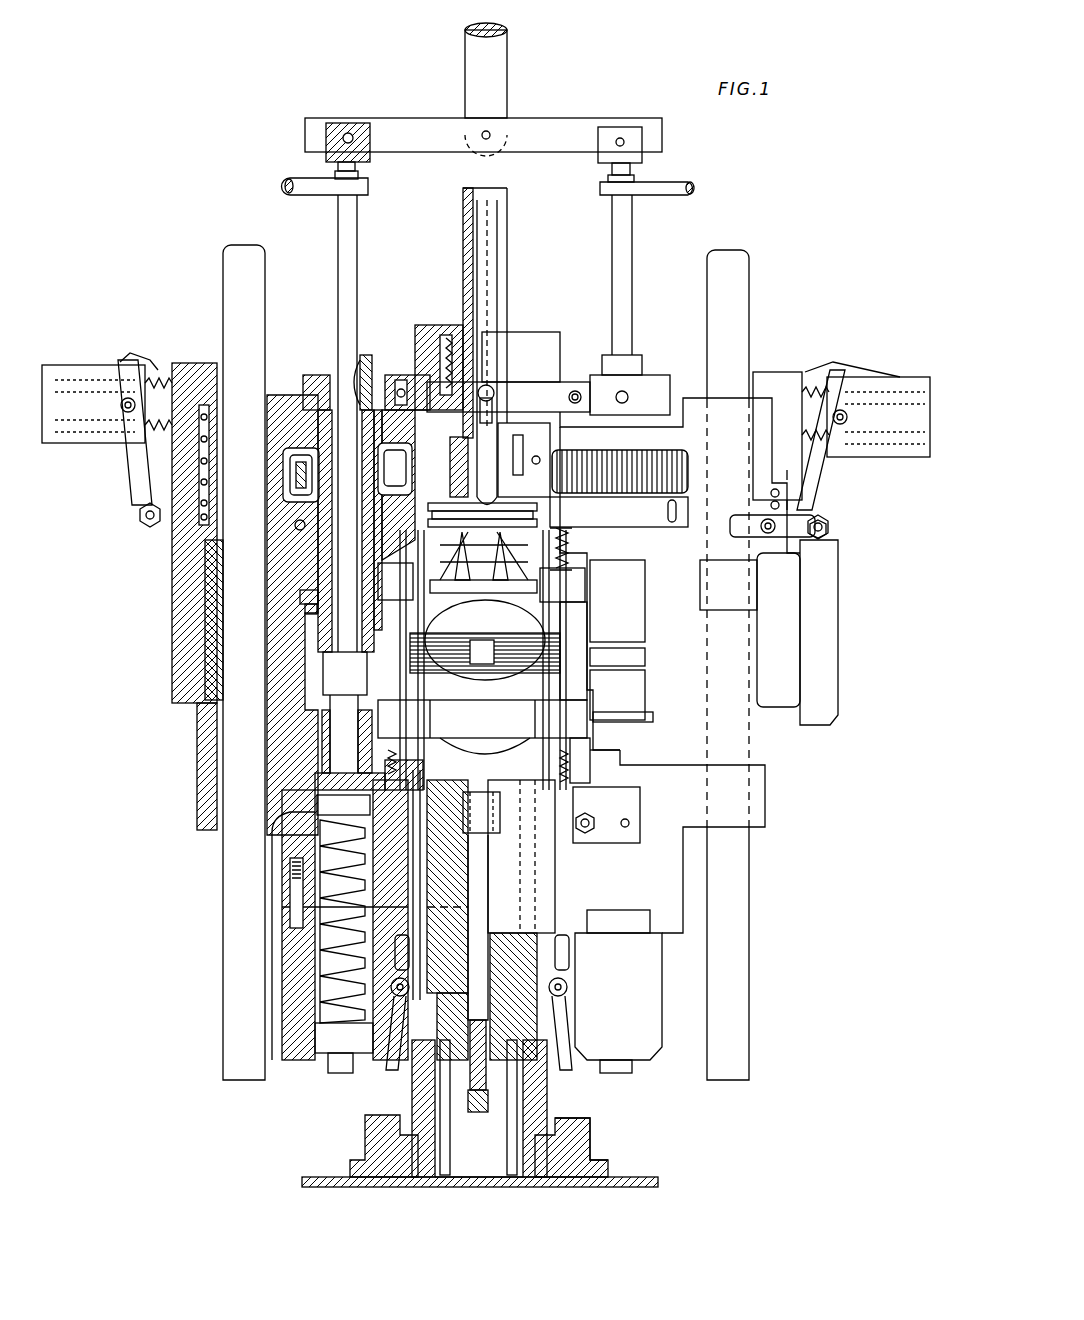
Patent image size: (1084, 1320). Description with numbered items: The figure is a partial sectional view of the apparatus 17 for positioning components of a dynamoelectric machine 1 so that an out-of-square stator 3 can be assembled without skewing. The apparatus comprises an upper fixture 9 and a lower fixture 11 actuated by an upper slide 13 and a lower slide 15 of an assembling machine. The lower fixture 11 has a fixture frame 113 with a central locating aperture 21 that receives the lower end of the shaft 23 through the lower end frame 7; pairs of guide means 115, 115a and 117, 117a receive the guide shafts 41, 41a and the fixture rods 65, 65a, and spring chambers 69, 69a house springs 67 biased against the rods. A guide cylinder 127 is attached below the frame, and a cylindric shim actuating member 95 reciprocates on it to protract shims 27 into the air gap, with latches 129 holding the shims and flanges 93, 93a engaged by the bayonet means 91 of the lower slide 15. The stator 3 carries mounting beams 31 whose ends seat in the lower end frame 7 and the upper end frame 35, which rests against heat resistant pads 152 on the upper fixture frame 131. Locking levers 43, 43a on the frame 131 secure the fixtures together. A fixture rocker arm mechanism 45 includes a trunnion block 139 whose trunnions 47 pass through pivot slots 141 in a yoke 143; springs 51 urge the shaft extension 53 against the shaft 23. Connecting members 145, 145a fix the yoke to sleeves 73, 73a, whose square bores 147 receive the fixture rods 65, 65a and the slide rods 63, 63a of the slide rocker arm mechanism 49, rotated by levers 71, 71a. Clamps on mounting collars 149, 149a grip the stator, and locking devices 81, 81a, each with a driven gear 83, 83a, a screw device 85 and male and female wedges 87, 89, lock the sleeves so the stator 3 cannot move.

The dynamoelectric machine 1 is at (614, 742).
The stator 3 is at (485, 653).
The lower end frame 7 is at (490, 722).
The upper fixture 9 is at (776, 359).
The lower fixture 11 is at (780, 811).
The upper slide 13 is at (507, 80).
The lower slide 15 is at (658, 1183).
The apparatus 17 is at (242, 211).
The locating aperture 21 is at (500, 808).
The shaft 23 is at (490, 848).
The shims 27 is at (506, 560).
The mounting beams 31 is at (510, 626).
The upper end frame 35 is at (575, 588).
The guide shaft 41 is at (223, 283).
The guide shaft 41a is at (749, 282).
The locking lever 43 is at (142, 552).
The locking lever 43a is at (828, 628).
The fixture rocker arm mechanism 45 is at (554, 343).
The trunnions 47 is at (491, 388).
The slide rocker arm mechanism 49 is at (561, 119).
The springs 51 is at (455, 330).
The shaft extension 53 is at (485, 252).
The slide rod 63 is at (338, 268).
The slide rod 63a is at (632, 268).
The fixture rod 65 is at (340, 577).
The fixture rod 65a is at (645, 654).
The spring 67 is at (318, 978).
The spring chamber 69 is at (300, 1010).
The spring chamber 69a is at (634, 1030).
The rotating lever 71 is at (318, 195).
The rotating lever 71a is at (668, 195).
The sleeve 73 is at (330, 622).
The sleeve 73a is at (632, 612).
The locking device 81 is at (277, 447).
The locking device 81a is at (738, 435).
The driven gear 83 is at (290, 470).
The driven gear 83a is at (688, 470).
The annular threaded screw device 85 is at (395, 446).
The male wedge member 87 is at (310, 590).
The female wedge member 89 is at (296, 503).
The bayonet means 91 is at (585, 1145).
The flange 93 is at (392, 1140).
The flange 93a is at (558, 1130).
The shim actuating member 95 is at (412, 1093).
The fixture frame 113 is at (765, 776).
The guide means 115 is at (203, 576).
The guide means 115a is at (760, 587).
The guide means 117 is at (330, 745).
The guide means 117a is at (658, 716).
The guide cylinder 127 is at (460, 853).
The latches 129 is at (570, 1003).
The fixture frame 131 is at (190, 363).
The trunnion block 139 is at (405, 378).
The pivot slots 141 is at (492, 397).
The yoke 143 is at (567, 382).
The connecting member 145 is at (310, 385).
The connecting member 145a is at (665, 385).
The square bore 147 is at (366, 360).
The mounting collar 149 is at (335, 690).
The mounting collar 149a is at (640, 688).
The heat resistant pads 152 is at (585, 540).